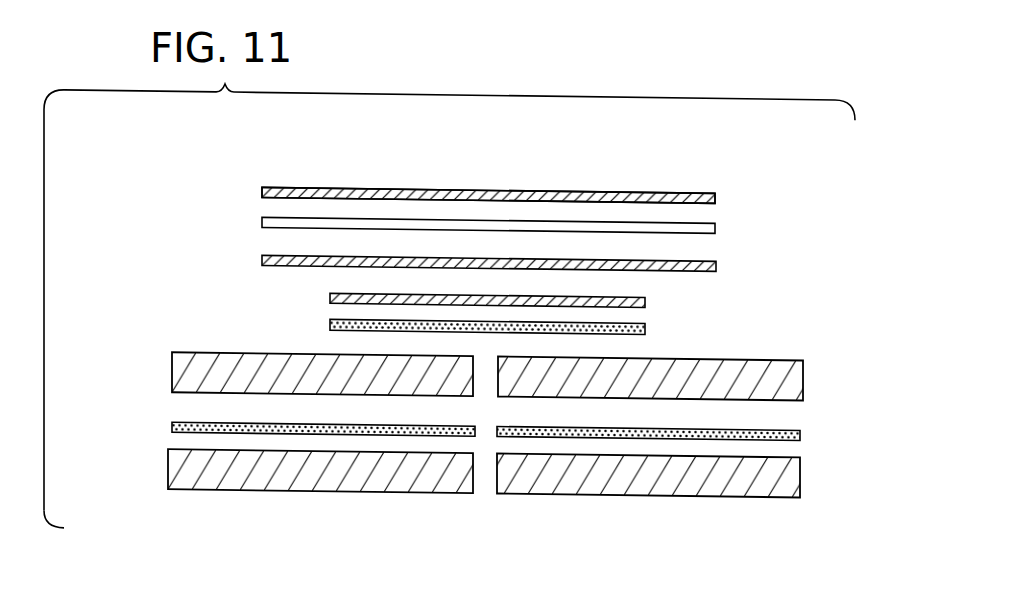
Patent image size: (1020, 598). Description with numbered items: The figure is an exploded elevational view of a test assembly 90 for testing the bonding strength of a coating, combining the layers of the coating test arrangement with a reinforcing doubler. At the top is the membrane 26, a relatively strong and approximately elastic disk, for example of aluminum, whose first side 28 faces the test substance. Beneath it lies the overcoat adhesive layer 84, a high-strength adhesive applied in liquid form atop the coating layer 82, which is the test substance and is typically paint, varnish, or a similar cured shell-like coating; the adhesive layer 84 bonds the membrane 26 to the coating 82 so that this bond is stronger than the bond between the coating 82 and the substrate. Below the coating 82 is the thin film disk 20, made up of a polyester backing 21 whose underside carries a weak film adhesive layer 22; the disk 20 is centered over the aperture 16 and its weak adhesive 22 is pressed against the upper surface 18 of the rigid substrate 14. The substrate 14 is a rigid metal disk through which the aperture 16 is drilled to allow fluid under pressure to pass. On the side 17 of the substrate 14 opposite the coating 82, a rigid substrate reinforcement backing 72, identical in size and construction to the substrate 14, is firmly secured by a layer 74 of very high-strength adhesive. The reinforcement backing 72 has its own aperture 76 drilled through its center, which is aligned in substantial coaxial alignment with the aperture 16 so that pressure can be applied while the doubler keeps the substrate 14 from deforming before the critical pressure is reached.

The rigid substrate 14 is at (812, 380).
The aperture 16 is at (474, 376).
The side of the substrate 17 is at (188, 393).
The upper surface of the substrate 18 is at (491, 350).
The thin film disk 20 is at (460, 306).
The polyester backing 21 is at (330, 298).
The weak film adhesive layer 22 is at (330, 326).
The membrane 26 is at (652, 184).
The first side of the membrane 28 is at (262, 200).
The rigid substrate reinforcement backing 72 is at (812, 484).
The layer of high-strength adhesive 74 is at (806, 437).
The aperture 76 is at (473, 473).
The coating layer 82 is at (724, 268).
The overcoat adhesive layer 84 is at (716, 229).
The test assembly 90 is at (740, 164).